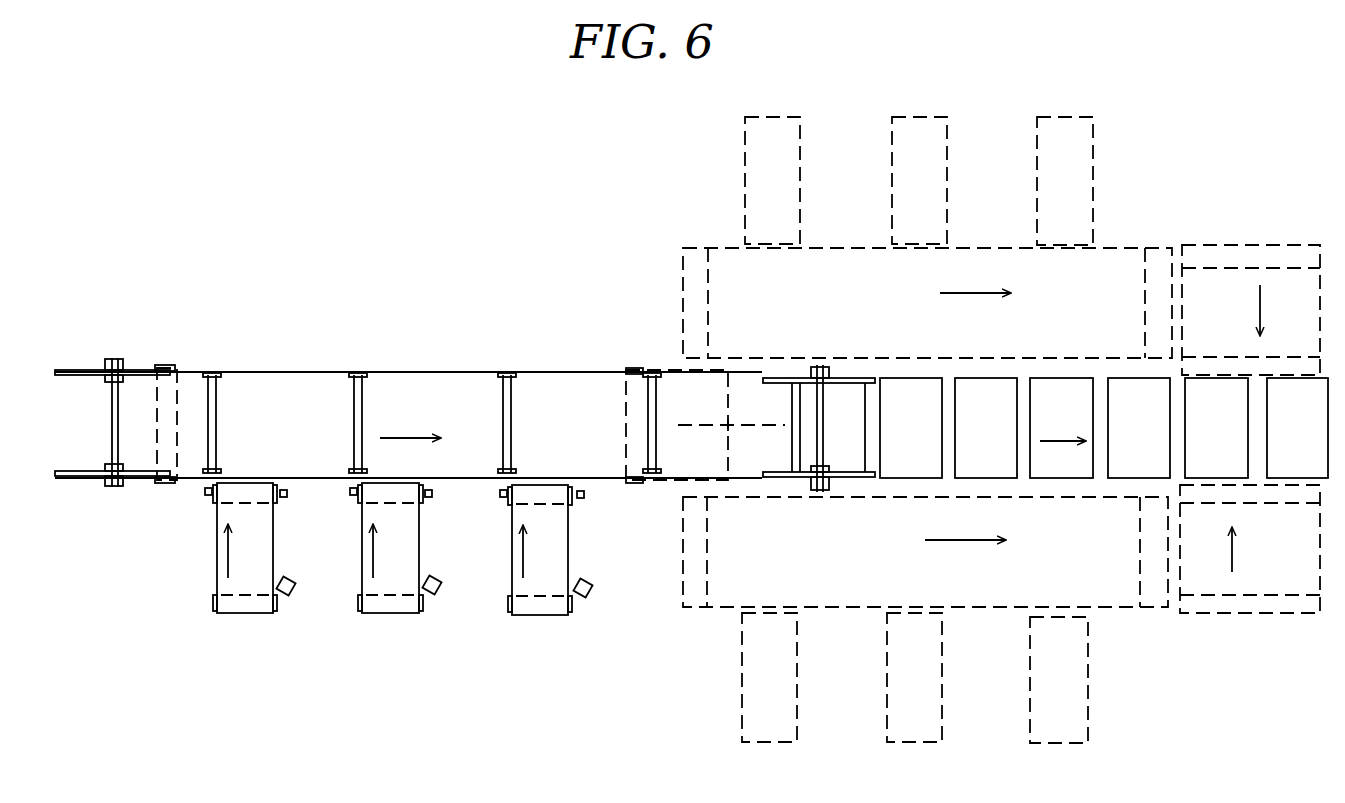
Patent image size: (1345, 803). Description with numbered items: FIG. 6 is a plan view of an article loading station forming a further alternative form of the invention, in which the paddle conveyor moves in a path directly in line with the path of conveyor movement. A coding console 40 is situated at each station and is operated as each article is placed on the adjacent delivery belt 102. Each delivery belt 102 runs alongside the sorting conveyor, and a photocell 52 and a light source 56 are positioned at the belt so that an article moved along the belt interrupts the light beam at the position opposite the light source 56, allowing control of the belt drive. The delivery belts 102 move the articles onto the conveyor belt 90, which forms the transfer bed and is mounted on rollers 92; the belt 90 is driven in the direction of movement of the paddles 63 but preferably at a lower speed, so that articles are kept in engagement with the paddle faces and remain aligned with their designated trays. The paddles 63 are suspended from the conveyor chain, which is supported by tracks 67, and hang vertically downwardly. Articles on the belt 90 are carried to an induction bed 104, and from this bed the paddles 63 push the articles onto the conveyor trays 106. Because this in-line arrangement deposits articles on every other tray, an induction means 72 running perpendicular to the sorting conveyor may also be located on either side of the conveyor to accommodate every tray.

The coding console 40 is at (293, 595).
The photocell 52 is at (205, 497).
The light source 56 is at (288, 493).
The paddles 63 is at (503, 415).
The tracks 67 is at (92, 477).
The induction means 72 is at (1310, 285).
The conveyor belt 90 is at (297, 372).
The rollers 92 is at (160, 366).
The delivery belts 102 is at (253, 608).
The induction bed 104 is at (683, 382).
The conveyor trays 106 is at (900, 385).